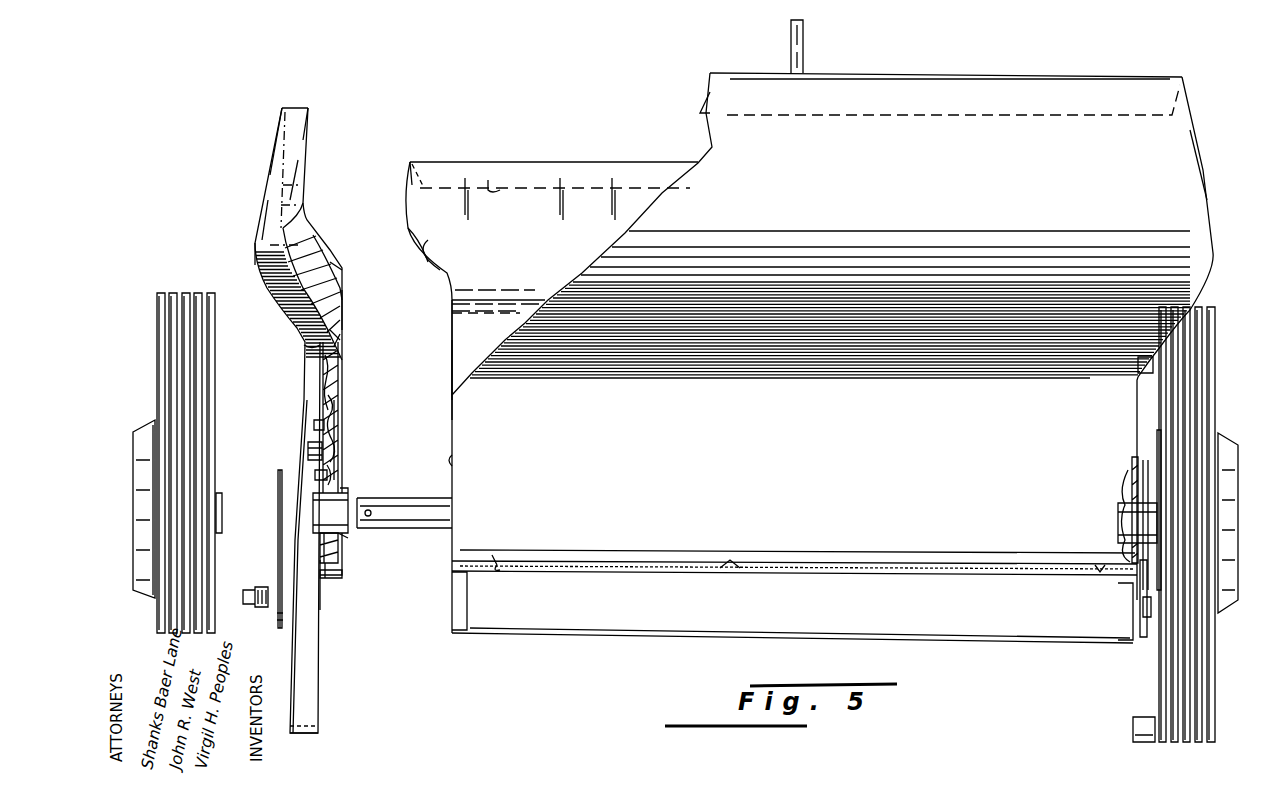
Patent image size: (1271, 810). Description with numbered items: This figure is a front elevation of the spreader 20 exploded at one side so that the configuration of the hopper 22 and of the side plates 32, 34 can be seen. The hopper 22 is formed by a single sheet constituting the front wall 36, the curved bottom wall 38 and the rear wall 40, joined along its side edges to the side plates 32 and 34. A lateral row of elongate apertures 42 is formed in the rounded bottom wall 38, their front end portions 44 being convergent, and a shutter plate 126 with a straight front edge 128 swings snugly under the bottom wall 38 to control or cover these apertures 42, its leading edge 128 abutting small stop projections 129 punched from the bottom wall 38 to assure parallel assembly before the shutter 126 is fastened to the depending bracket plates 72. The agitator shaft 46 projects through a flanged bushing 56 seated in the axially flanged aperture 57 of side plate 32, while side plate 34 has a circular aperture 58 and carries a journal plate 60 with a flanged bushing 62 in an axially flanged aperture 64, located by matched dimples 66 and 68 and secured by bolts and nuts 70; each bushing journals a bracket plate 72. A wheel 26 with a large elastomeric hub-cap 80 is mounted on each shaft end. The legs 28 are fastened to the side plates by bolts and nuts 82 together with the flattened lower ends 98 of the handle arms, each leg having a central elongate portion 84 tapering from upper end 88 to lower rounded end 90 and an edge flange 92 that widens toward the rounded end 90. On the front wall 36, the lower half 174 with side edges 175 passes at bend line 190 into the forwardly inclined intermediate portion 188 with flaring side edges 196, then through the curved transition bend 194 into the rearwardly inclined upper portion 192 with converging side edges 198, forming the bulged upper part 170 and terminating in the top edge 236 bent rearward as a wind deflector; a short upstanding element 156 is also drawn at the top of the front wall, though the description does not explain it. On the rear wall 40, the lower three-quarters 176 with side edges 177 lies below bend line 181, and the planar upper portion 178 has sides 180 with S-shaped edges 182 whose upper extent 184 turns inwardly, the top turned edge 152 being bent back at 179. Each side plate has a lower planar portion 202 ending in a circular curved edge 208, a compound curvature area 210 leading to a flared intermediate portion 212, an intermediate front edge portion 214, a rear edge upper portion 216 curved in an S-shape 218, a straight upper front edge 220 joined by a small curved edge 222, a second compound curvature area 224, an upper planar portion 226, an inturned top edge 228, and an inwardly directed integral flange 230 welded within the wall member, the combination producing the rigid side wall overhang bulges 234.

The spreader 20 is at (446, 90).
The hopper 22 is at (662, 86).
The wheels 26 is at (155, 300).
The legs 28 is at (305, 655).
The side plate 32 is at (1138, 462).
The side plate 34 is at (345, 352).
The front wall 36 is at (570, 396).
The bottom wall 38 is at (475, 552).
The rear wall 40 is at (458, 330).
The elongate apertures 42 is at (710, 570).
The front end portions 44 is at (732, 558).
The shaft 46 is at (412, 503).
The flanged bushing 56 is at (1128, 508).
The axially flanged aperture 57 is at (1120, 498).
The circular aperture 58 is at (335, 474).
The journal plate 60 is at (314, 474).
The flanged bushing 62 is at (350, 490).
The axially flanged aperture 64 is at (338, 545).
The dimple 66 is at (338, 430).
The dimple 68 is at (314, 422).
The bolts and nuts 70 is at (307, 446).
The bracket plate 72 is at (277, 545).
The hub-caps 80 is at (132, 445).
The bolts and nuts 82 is at (340, 338).
The central elongate portion 84 is at (320, 590).
The upper end 88 is at (304, 348).
The lower rounded end 90 is at (305, 715).
The edge flange 92 is at (293, 656).
The lower end 98 is at (320, 375).
The shutter plate 126 is at (690, 625).
The front edge 128 is at (634, 570).
The projections 129 is at (503, 560).
The top turned edge 152 is at (487, 180).
The pipe 156 is at (803, 50).
The bulged upper part 170 is at (905, 340).
The lower half 174 is at (697, 450).
The side edges 175 is at (455, 462).
The lower three-quarters 176 is at (492, 350).
The side edges 177 is at (452, 378).
The upper portion 178 is at (512, 246).
The bend 179 is at (550, 162).
The sides 180 is at (420, 262).
The bend line 181 is at (452, 300).
The edges 182 is at (410, 240).
The upper extent 184 is at (410, 168).
The intermediate portion 188 is at (768, 340).
The bend line 190 is at (720, 360).
The upper portion 192 is at (883, 165).
The transition bend 194 is at (793, 280).
The side edges 196 is at (1185, 325).
The side edges 198 is at (1204, 180).
The lower planar portion 202 is at (340, 410).
The circular curved edge portion 208 is at (330, 582).
The compound curvature area 210 is at (342, 296).
The intermediate portion 212 is at (310, 242).
The intermediate edge portion 214 is at (290, 300).
The upper portion 216 is at (302, 168).
The S-shape 218 is at (300, 220).
The upper edge portion 220 is at (275, 158).
The curved edge portion 222 is at (257, 255).
The second compound curvature area 224 is at (312, 232).
The upper planar portion 226 is at (275, 205).
The top edge 228 is at (312, 118).
The flange 230 is at (342, 268).
The overhang 234 is at (248, 284).
The top edge 236 is at (699, 110).